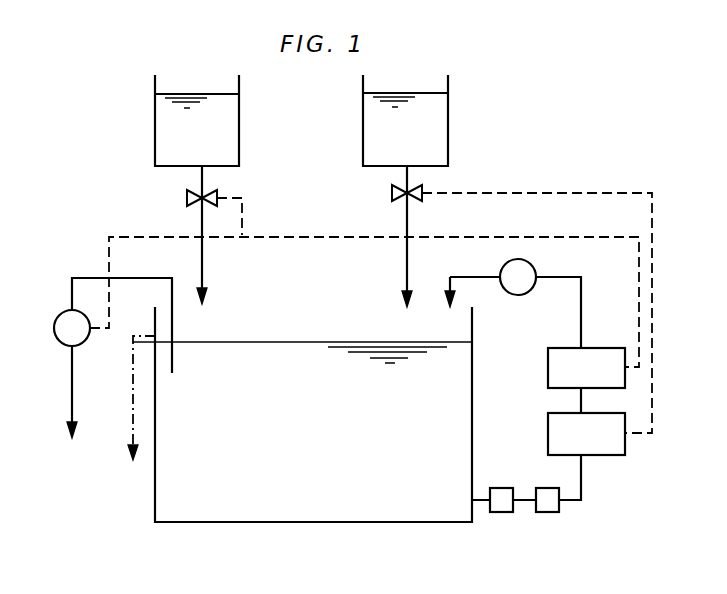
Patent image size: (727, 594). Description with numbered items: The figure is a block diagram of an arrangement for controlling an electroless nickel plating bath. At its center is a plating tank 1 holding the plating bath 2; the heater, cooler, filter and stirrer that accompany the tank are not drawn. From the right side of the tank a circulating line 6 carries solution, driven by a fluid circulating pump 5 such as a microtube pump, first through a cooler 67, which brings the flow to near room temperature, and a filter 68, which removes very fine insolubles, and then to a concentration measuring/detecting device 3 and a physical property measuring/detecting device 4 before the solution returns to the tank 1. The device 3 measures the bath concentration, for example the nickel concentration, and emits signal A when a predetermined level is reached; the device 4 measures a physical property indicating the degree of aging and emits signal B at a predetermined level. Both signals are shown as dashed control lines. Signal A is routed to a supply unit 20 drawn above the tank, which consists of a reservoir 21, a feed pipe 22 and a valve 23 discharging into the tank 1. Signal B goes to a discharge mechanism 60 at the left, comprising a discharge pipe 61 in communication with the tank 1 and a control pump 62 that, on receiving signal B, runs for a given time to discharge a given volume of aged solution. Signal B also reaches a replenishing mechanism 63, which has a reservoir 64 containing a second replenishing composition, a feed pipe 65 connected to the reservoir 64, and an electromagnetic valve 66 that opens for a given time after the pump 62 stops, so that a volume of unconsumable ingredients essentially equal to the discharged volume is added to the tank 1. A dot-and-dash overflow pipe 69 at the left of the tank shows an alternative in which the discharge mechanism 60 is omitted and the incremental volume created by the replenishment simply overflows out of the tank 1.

The plating tank 1 is at (155, 489).
The plating bath 2 is at (258, 343).
The concentration measuring/detecting device 3 is at (548, 429).
The physical property measuring/detecting device 4 is at (548, 364).
The fluid circulating pump 5 is at (525, 272).
The circulating line 6 is at (581, 483).
The replenisher supply unit 20 is at (423, 191).
The replenisher tank 21 is at (362, 145).
The supply pipe 22 is at (402, 176).
The valve 23 is at (392, 198).
The discharge mechanism 60 is at (87, 350).
The discharge pipe 61 is at (72, 388).
The control pump 62 is at (54, 328).
The replenishing mechanism 63 is at (197, 189).
The reservoir 64 is at (155, 132).
The feed pipe 65 is at (202, 183).
The electromagnetic valve 66 is at (188, 200).
The cooler 67 is at (506, 514).
The filter 68 is at (552, 514).
The overflow pipe 69 is at (133, 394).
The signal A is at (566, 193).
The signal B is at (355, 237).